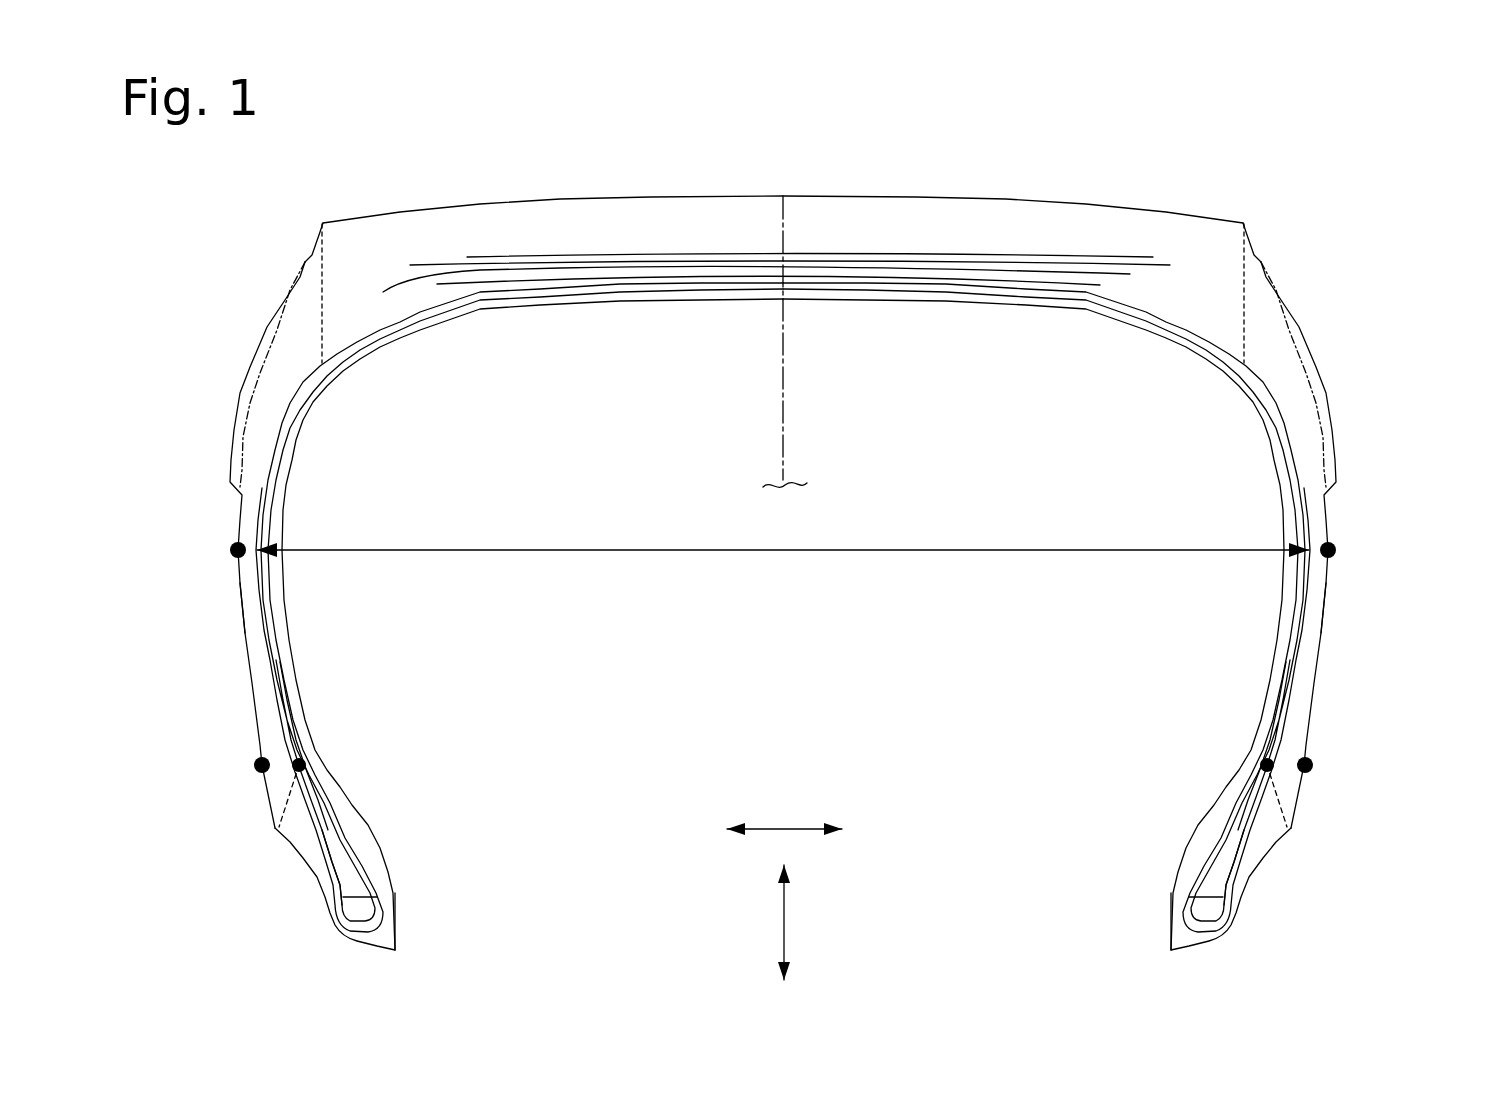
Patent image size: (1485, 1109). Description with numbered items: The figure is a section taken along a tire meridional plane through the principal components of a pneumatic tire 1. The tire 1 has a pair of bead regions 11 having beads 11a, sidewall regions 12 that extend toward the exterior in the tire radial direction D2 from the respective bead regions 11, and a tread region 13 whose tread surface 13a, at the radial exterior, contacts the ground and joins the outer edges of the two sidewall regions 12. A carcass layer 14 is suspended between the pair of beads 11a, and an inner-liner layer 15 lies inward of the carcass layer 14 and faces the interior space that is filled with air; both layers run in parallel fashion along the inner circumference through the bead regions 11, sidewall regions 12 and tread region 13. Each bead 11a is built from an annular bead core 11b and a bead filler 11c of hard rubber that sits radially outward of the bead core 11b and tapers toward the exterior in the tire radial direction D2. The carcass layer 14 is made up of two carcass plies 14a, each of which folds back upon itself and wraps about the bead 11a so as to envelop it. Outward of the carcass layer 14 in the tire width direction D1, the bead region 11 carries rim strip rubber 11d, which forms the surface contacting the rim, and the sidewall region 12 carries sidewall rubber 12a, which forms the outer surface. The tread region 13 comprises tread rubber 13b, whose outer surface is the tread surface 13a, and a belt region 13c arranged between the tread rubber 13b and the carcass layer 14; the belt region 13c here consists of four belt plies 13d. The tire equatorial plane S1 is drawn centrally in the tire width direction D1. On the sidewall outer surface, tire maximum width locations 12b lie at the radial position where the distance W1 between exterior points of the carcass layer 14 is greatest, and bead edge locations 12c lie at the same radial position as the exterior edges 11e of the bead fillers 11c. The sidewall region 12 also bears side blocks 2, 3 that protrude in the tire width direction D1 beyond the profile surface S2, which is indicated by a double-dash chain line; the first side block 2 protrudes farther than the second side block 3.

The pneumatic tire 1 is at (1342, 124).
The first side block 2 is at (786, 545).
The second side block 3 is at (255, 335).
The bead region 11 is at (786, 845).
The bead 11a is at (788, 832).
The bead core 11b is at (367, 913).
The bead filler 11c is at (348, 850).
The rim strip rubber 11d is at (315, 857).
The exterior edge of bead filler 11e is at (299, 765).
The sidewall region 12 is at (786, 545).
The sidewall rubber 12a is at (252, 597).
The tire maximum width location 12b is at (238, 550).
The bead edge location 12c is at (262, 765).
The tread region 13 is at (838, 185).
The tread surface 13a is at (576, 197).
The tread rubber 13b is at (705, 222).
The belt region 13c is at (776, 262).
The belt ply 13d is at (983, 273).
The carcass layer 14 is at (783, 607).
The carcass ply 14a is at (355, 345).
The inner-liner layer 15 is at (860, 300).
The tire equatorial plane S1 is at (783, 443).
The profile surface S2 is at (250, 405).
The distance between exterior points of carcass layer W1 is at (783, 564).
The tire width direction D1 is at (784, 816).
The tire radial direction D2 is at (802, 922).